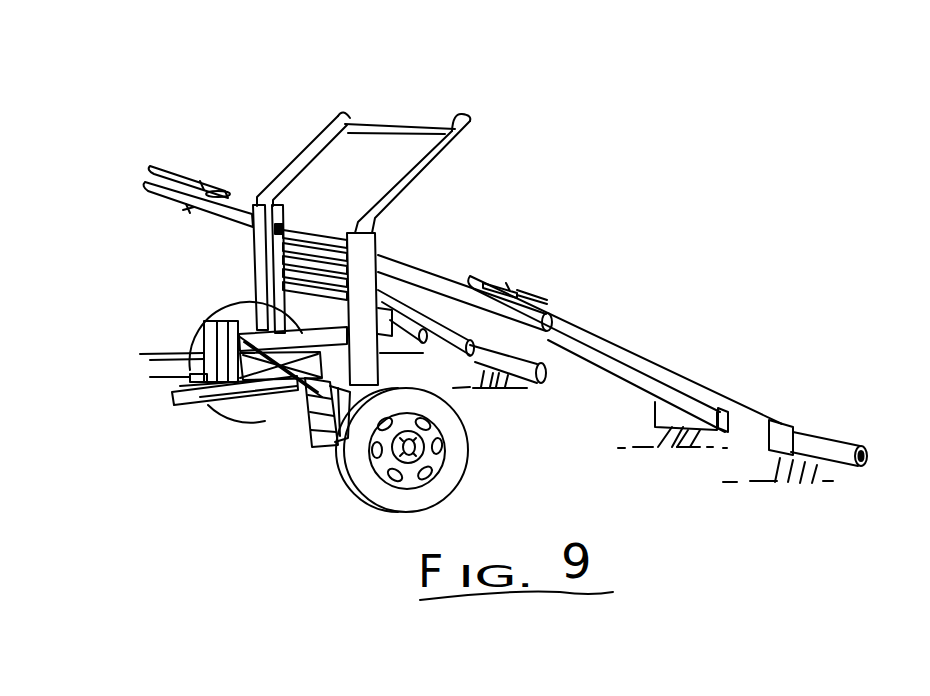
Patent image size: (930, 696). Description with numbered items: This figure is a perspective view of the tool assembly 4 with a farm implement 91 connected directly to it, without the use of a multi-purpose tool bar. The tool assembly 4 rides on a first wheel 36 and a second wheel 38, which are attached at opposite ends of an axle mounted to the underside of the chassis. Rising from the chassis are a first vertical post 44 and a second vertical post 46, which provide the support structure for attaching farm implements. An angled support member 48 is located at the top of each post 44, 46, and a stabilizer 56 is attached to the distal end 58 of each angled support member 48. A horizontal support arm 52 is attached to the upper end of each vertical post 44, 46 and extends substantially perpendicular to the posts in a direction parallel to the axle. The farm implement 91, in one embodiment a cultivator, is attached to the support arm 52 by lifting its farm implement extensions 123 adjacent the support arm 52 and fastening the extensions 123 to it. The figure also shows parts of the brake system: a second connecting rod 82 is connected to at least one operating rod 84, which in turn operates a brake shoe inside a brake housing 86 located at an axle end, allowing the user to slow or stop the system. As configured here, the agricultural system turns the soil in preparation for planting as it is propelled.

The tool assembly 4 is at (275, 172).
The first wheel 36 is at (393, 468).
The second wheel 38 is at (250, 305).
The first vertical post 44 is at (380, 253).
The second vertical post 46 is at (257, 253).
The angled support member 48 is at (403, 172).
The horizontal support arm 52 is at (410, 278).
The stabilizer 56 is at (385, 132).
The distal end 58 is at (150, 355).
The second connecting rod 82 is at (173, 398).
The operating rod 84 is at (317, 410).
The brake housing 86 is at (315, 442).
The farm implement 91 is at (575, 326).
The farm implement extension 123 is at (553, 290).